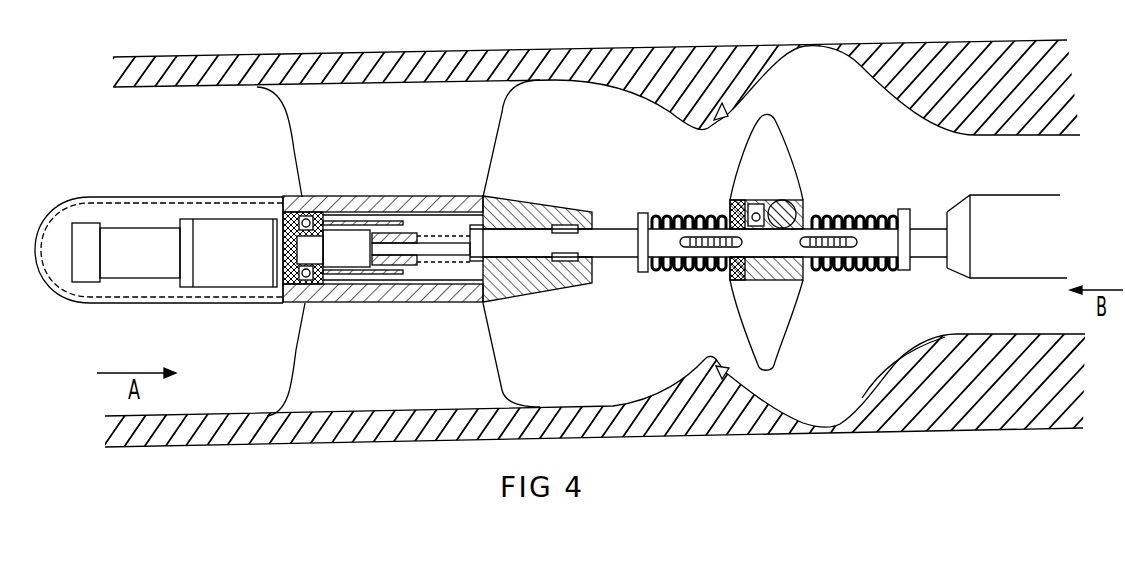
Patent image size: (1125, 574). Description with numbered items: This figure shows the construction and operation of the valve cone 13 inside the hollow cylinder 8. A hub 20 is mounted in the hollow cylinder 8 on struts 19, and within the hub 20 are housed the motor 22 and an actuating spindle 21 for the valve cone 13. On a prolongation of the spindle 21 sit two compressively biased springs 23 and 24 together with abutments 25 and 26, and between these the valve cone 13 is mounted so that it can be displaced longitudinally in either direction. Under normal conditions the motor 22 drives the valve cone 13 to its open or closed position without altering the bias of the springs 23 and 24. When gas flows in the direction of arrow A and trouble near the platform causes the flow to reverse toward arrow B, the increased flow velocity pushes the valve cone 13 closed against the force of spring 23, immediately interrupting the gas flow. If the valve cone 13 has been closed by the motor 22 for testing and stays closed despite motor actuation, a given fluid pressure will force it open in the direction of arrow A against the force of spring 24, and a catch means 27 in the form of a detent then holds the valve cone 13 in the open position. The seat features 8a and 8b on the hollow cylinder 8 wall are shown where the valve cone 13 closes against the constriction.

The hollow cylinder 8 is at (525, 56).
The upper seat notch 8a is at (757, 53).
The lower seat notch 8b is at (719, 373).
The valve cone 13 is at (771, 130).
The struts 19 is at (343, 113).
The hub 20 is at (363, 303).
The actuating spindle 21 is at (437, 243).
The motor 22 is at (215, 230).
The spring 23 is at (676, 213).
The spring 24 is at (849, 215).
The abutment 25 is at (727, 244).
The abutment 26 is at (808, 245).
The catch means 27 is at (770, 200).